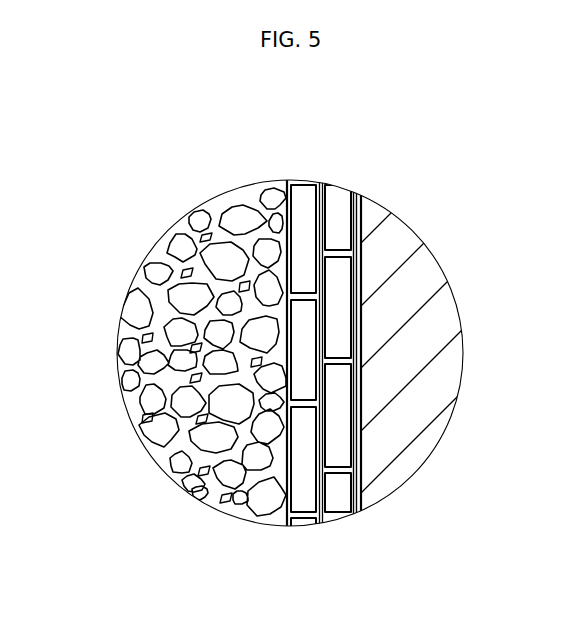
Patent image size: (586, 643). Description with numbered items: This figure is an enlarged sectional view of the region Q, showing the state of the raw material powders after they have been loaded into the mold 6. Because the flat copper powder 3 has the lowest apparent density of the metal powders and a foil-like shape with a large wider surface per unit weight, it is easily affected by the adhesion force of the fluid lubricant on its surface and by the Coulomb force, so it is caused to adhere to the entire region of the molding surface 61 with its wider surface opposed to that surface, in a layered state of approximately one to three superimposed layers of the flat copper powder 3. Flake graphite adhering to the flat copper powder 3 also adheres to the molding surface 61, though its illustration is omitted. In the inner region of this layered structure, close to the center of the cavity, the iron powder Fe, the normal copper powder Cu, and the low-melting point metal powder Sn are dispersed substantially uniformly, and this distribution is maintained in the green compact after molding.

The flat copper powder 3 is at (326, 356).
The molding surface 61 is at (357, 218).
The mold 6 is at (432, 268).
The region Q is at (111, 275).
The normal copper powder Cu is at (140, 374).
The low-melting point metal powder Sn is at (203, 474).
The iron powder Fe is at (236, 250).